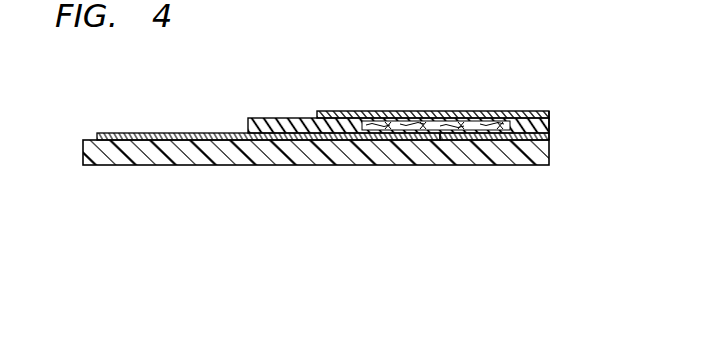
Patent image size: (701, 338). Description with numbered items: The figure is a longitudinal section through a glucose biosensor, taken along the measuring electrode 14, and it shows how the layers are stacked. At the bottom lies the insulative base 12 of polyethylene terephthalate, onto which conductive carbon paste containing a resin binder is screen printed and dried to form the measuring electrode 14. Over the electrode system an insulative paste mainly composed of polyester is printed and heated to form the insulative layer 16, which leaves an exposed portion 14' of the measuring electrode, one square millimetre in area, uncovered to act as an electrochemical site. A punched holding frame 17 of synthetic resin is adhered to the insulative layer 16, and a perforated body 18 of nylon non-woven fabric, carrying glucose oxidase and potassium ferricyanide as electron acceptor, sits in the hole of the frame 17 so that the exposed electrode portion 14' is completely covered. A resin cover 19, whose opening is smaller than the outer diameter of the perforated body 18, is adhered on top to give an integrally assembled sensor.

The insulative base 12 is at (122, 165).
The measuring electrode 14 is at (268, 120).
The exposed portion of measuring electrode 14' is at (494, 110).
The insulative layer 16 is at (549, 131).
The holding frame 17 is at (268, 118).
The perforated body 18 is at (428, 121).
The resin cover 19 is at (357, 111).